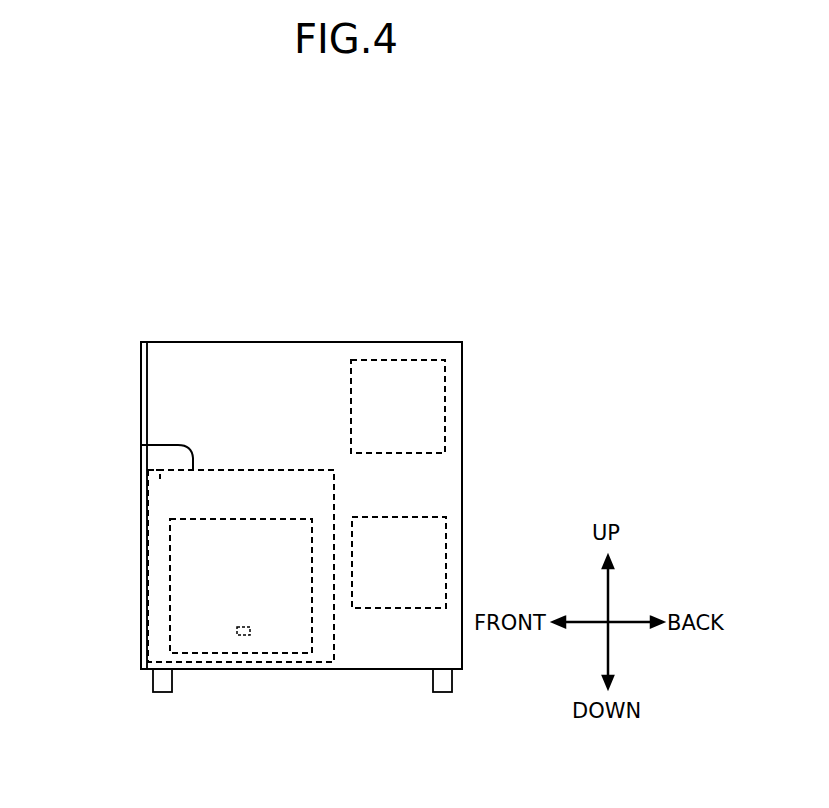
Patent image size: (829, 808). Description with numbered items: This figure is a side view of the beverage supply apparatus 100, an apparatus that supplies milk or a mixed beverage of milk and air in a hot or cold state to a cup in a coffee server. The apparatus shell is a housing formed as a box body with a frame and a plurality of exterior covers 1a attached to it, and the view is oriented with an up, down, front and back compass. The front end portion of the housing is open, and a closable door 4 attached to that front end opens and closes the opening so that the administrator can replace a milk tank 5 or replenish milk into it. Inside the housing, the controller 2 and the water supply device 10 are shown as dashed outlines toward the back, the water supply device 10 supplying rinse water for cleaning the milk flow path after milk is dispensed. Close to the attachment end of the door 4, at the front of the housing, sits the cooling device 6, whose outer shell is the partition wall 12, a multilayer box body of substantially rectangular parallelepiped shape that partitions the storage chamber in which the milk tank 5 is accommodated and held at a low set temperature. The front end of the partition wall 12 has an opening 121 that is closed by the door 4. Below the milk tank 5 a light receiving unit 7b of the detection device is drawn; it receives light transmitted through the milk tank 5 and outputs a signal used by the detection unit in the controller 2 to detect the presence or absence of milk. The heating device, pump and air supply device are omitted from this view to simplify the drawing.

The beverage supply apparatus 100 is at (139, 244).
The exterior cover 1a is at (261, 342).
The door 4 is at (141, 372).
The cooling device 6 is at (289, 455).
The controller 2 is at (393, 360).
The water supply device 10 is at (446, 548).
The partition wall 12 is at (141, 445).
The opening 121 is at (155, 473).
The milk tank 5 is at (170, 598).
The light receiving unit 7b is at (247, 634).